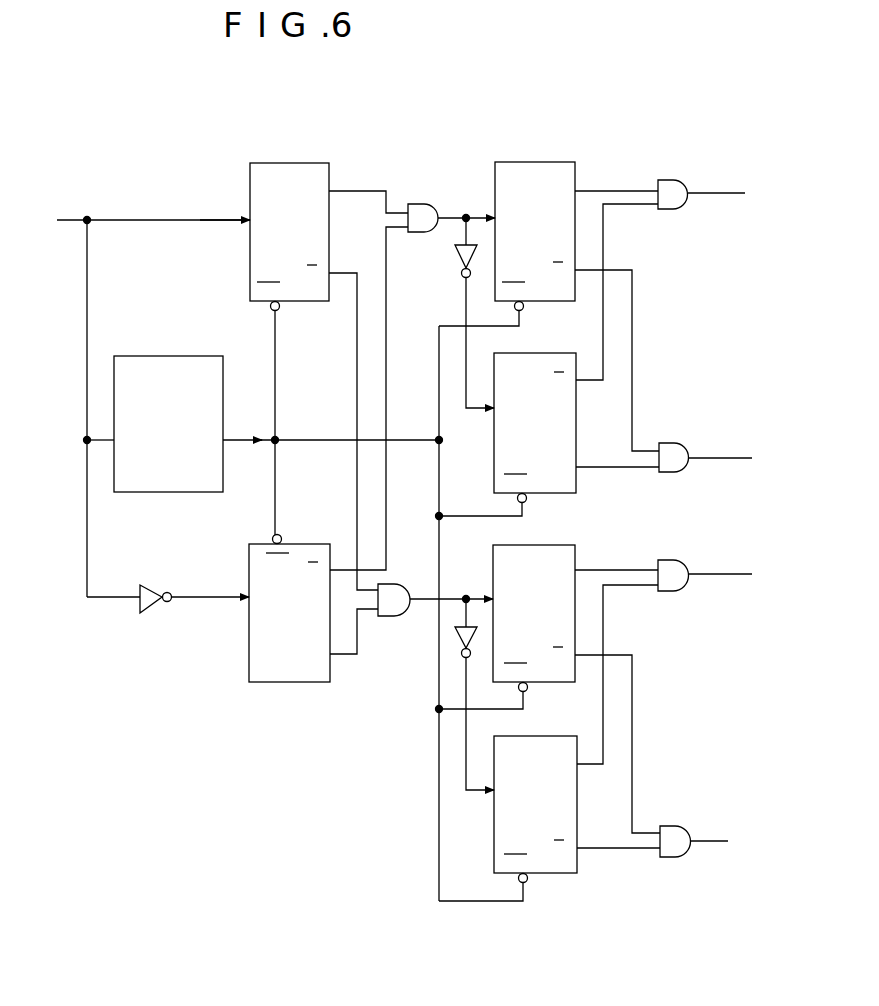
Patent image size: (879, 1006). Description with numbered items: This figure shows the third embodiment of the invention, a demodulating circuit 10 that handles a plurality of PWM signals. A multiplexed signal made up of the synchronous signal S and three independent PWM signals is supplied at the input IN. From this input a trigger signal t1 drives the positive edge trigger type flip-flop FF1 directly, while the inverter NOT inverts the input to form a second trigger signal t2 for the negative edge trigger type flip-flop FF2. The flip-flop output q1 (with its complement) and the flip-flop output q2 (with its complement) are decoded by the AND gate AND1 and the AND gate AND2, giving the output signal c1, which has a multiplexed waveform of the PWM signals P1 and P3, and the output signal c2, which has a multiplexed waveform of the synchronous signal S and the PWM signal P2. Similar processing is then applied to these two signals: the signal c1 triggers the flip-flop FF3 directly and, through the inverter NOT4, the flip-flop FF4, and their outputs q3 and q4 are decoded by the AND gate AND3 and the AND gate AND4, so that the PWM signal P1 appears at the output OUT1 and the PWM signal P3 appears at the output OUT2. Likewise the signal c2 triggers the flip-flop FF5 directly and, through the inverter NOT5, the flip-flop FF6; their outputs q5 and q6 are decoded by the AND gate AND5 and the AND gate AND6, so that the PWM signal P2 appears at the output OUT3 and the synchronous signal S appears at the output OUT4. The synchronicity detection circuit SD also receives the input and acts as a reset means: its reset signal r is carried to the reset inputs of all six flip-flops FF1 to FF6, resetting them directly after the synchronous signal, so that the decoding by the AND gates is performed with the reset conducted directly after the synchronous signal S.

The demodulating circuit 10 is at (592, 130).
The input signal IN is at (132, 373).
The synchronicity detection circuit SD is at (160, 356).
The inverter NOT is at (130, 585).
The inverter NOT4 is at (447, 313).
The inverter NOT5 is at (458, 643).
The flip-flop FF1 is at (289, 337).
The flip-flop FF2 is at (289, 621).
The flip-flop FF3 is at (507, 232).
The flip-flop FF4 is at (506, 424).
The flip-flop FF5 is at (506, 617).
The flip-flop FF6 is at (508, 806).
The AND gate AND1 is at (420, 233).
The AND gate AND2 is at (392, 613).
The AND gate AND3 is at (669, 209).
The AND gate AND4 is at (672, 471).
The AND gate AND5 is at (662, 589).
The AND gate AND6 is at (674, 857).
The output PWM1 OUT1 is at (731, 179).
The output PWM3 OUT2 is at (734, 439).
The output PWM2 OUT3 is at (733, 561).
The output SYNC OUT4 is at (721, 819).
The trigger signal t1 is at (225, 206).
The trigger signal t2 is at (210, 583).
The reset signal r is at (300, 409).
The flip-flop output q1 is at (368, 191).
The flip-flop output q2 is at (354, 644).
The flip-flop output q3 is at (616, 181).
The flip-flop output q4 is at (617, 481).
The flip-flop output q5 is at (616, 557).
The flip-flop output q6 is at (618, 861).
The output signal c1 is at (466, 207).
The output signal c2 is at (451, 588).